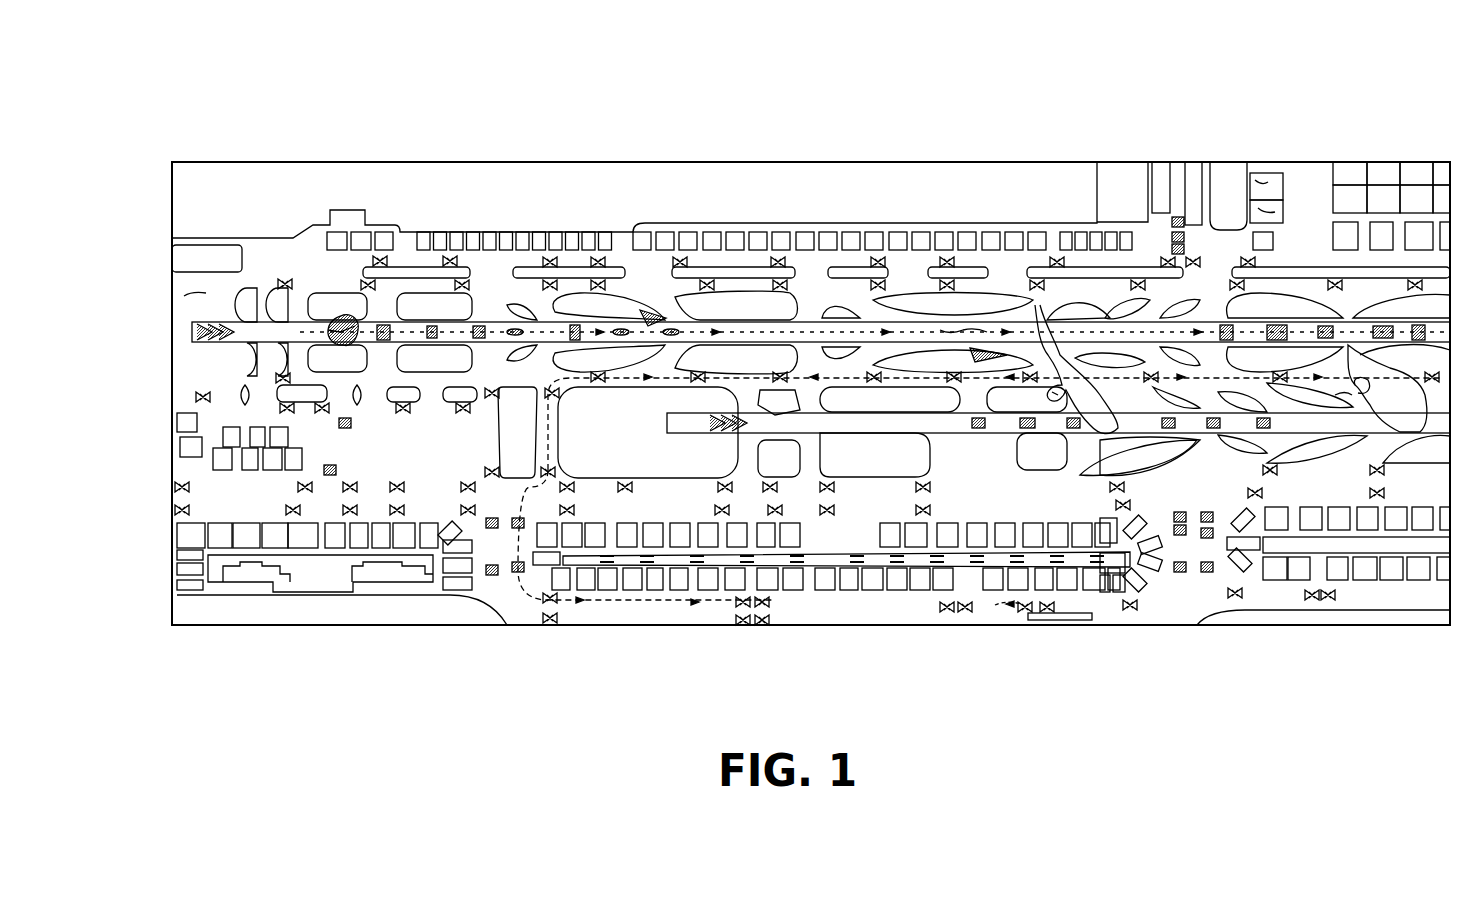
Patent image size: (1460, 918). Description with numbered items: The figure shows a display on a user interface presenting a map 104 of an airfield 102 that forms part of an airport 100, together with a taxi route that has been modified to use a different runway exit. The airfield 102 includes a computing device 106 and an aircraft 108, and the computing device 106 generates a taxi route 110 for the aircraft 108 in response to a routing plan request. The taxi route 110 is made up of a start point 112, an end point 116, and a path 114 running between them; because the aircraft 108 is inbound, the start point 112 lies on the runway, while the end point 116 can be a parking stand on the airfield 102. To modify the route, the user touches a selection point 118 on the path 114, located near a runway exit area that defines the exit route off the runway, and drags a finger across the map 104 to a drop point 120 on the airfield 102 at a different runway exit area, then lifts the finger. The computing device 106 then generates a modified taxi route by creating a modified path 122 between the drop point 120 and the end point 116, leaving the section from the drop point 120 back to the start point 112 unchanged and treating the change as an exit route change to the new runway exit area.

The airport 100 is at (238, 86).
The airfield 102 is at (165, 194).
The map 104 is at (208, 294).
The computing device 106 is at (1238, 212).
The aircraft 108 is at (342, 322).
The taxi route 110 is at (650, 322).
The start point 112 is at (376, 333).
The path 114 is at (822, 335).
The end point 116 is at (770, 600).
The selection point 118 is at (1040, 355).
The drop point 120 is at (1350, 345).
The modified path 122 is at (1274, 333).